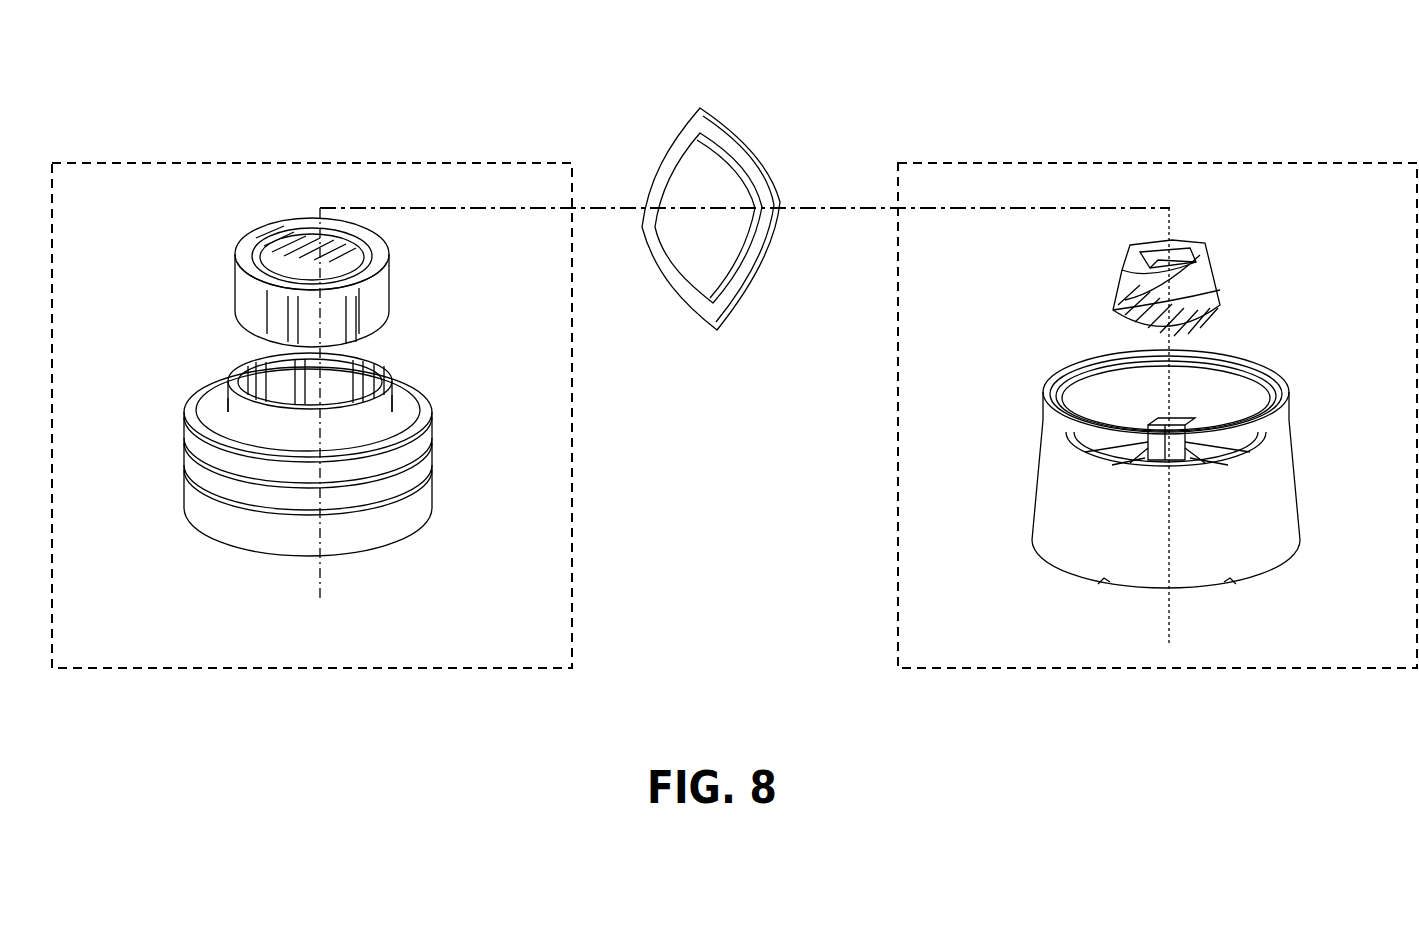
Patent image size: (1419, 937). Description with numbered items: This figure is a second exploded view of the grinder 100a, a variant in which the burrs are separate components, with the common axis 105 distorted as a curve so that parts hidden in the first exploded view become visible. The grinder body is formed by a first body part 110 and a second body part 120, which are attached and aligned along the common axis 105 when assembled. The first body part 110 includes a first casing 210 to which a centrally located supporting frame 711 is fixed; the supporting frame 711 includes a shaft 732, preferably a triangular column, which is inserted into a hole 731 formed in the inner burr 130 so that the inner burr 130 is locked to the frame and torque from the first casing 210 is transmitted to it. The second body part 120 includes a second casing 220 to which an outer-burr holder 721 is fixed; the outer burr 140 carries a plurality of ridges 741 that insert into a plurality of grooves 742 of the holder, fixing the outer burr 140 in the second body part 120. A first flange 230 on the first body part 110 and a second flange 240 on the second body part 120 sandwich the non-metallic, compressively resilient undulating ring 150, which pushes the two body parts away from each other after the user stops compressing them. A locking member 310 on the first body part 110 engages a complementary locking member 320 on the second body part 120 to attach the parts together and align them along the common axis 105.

The grinder 100a is at (755, 648).
The common axis 105 is at (745, 168).
The first body part 110 is at (1157, 378).
The second body part 120 is at (312, 375).
The inner burr 130 is at (1210, 266).
The outer burr 140 is at (302, 292).
The undulating ring 150 is at (722, 178).
The first casing 210 is at (1150, 432).
The second casing 220 is at (303, 458).
The first flange 230 is at (1089, 445).
The second flange 240 is at (394, 407).
The locking member 310 is at (1276, 417).
The complementary locking member 320 is at (232, 470).
The supporting frame 711 is at (1183, 368).
The outer-burr holder 721 is at (258, 371).
The hole 731 is at (1163, 255).
The shaft 732 is at (1095, 358).
The ridges 741 is at (291, 311).
The grooves 742 is at (258, 378).